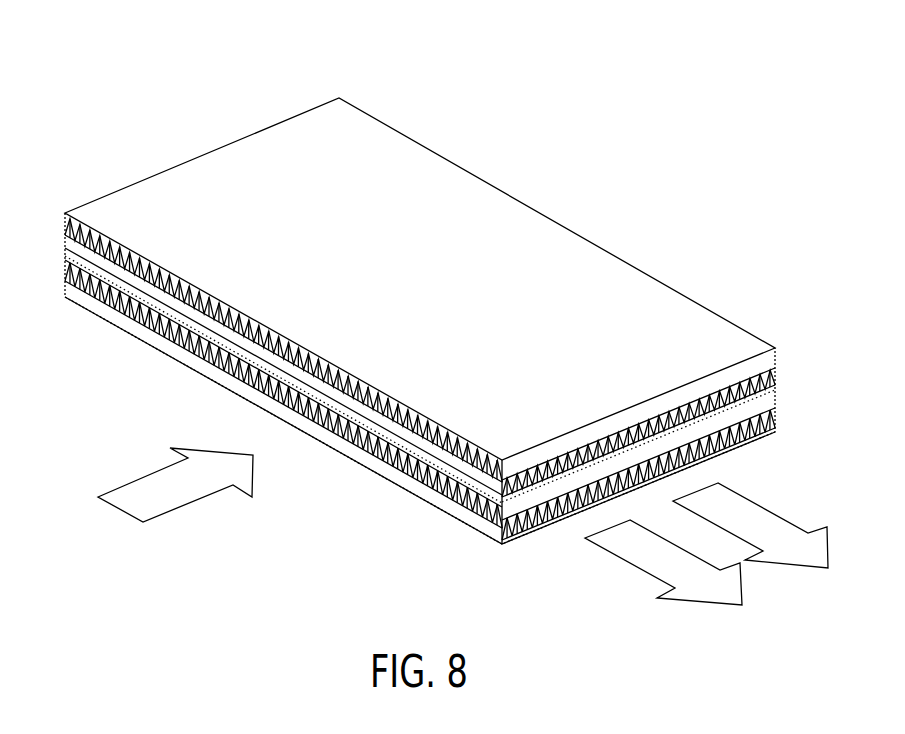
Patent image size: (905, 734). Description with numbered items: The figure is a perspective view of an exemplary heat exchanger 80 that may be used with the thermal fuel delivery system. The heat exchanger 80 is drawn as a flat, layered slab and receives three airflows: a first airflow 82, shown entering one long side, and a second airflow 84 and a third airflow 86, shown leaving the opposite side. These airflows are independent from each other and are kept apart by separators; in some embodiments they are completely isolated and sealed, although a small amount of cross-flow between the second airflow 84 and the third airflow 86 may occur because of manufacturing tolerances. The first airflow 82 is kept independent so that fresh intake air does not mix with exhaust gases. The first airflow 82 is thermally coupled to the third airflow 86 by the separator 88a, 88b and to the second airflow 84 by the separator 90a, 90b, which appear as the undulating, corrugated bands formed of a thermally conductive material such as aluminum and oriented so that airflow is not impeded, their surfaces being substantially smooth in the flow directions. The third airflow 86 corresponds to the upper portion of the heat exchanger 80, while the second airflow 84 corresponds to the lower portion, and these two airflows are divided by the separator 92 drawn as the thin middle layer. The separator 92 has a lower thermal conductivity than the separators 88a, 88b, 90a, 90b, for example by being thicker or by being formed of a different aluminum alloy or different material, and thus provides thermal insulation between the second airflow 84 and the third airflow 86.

The heat exchanger 80 is at (162, 88).
The first airflow 82 is at (130, 498).
The second airflow 84 is at (635, 553).
The third airflow 86 is at (757, 523).
The separator 88a is at (70, 228).
The separator 88b is at (773, 377).
The separator 90a is at (70, 270).
The separator 90b is at (773, 428).
The separator 92 is at (773, 392).